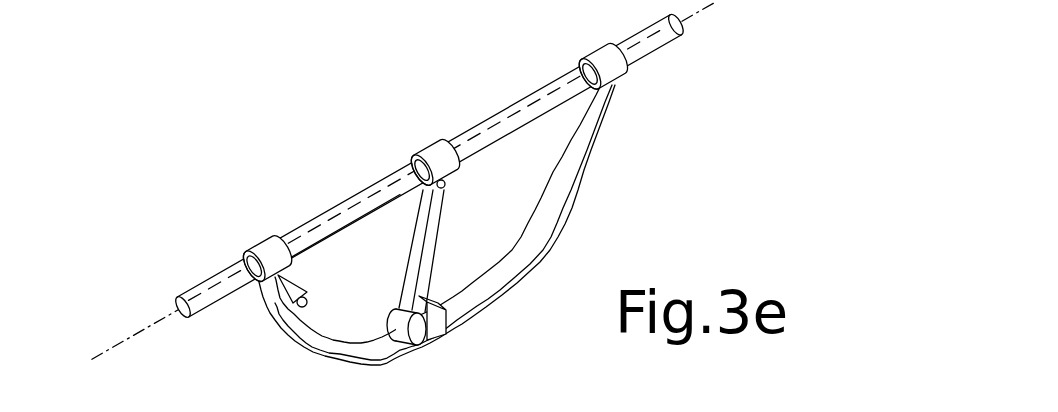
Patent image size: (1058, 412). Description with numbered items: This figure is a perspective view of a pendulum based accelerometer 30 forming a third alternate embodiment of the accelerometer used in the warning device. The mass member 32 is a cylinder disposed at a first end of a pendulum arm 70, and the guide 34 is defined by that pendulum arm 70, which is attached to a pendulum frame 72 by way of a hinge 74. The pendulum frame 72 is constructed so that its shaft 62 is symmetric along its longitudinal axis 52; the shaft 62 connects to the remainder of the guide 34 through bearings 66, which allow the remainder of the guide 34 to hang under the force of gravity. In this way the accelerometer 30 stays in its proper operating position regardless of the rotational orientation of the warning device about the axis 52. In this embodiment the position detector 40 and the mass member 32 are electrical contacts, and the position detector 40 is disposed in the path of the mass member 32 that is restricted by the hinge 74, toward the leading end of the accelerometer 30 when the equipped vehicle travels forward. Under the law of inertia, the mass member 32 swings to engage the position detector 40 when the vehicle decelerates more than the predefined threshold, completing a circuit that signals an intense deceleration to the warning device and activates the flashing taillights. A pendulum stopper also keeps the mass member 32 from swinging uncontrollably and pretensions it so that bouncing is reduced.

The accelerometer 30 is at (192, 202).
The mass member 32 is at (422, 338).
The guide 34 is at (505, 262).
The position detector 40 is at (278, 312).
The longitudinal axis 52 is at (722, 1).
The shaft 62 is at (330, 211).
The bearings 66 is at (270, 233).
The pendulum arm 70 is at (421, 212).
The pendulum frame 72 is at (373, 343).
The hinge 74 is at (450, 179).